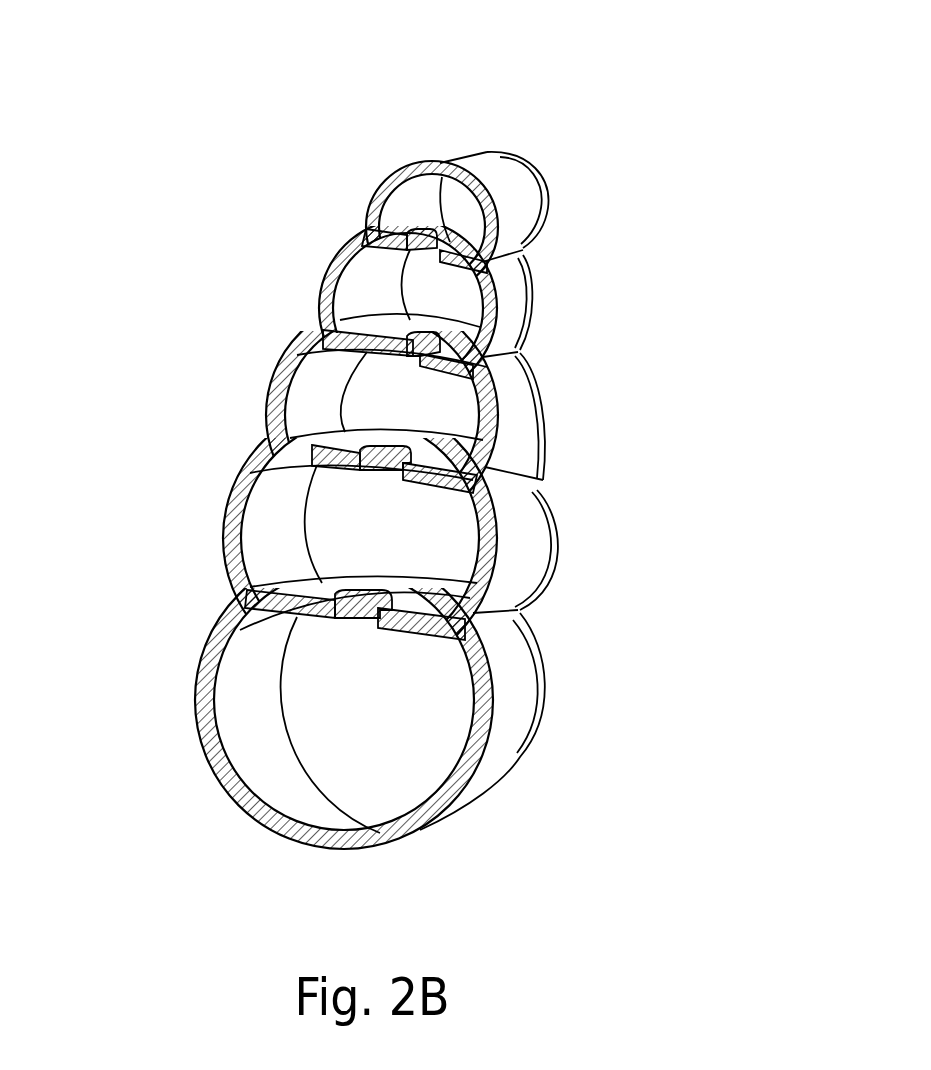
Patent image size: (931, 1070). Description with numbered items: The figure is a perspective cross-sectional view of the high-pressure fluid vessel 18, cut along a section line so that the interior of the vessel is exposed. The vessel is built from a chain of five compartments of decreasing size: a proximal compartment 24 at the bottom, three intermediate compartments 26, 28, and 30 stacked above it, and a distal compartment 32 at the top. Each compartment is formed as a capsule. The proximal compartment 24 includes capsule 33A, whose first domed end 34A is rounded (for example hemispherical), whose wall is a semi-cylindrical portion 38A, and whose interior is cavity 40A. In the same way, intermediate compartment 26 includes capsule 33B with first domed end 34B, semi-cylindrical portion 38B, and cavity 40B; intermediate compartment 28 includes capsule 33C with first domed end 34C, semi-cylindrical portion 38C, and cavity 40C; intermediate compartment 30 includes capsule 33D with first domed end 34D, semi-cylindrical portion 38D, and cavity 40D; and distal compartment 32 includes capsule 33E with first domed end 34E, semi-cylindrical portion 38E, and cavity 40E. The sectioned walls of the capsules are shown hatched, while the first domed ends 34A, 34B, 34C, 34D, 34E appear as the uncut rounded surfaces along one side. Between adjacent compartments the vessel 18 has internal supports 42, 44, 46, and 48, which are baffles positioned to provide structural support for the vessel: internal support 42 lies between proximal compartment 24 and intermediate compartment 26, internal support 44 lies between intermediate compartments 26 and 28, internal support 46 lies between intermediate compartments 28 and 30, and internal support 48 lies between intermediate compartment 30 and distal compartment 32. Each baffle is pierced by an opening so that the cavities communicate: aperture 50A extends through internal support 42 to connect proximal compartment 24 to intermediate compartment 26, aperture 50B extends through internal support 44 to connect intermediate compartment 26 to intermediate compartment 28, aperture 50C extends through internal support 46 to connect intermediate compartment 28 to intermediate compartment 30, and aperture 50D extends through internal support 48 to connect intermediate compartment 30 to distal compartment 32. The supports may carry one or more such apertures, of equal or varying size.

The high-pressure fluid vessel 18 is at (110, 96).
The proximal compartment 24 is at (576, 685).
The intermediate compartment 26 is at (576, 538).
The intermediate compartment 28 is at (566, 403).
The intermediate compartment 30 is at (560, 290).
The distal compartment 32 is at (562, 187).
The capsule 33A is at (504, 745).
The capsule 33B is at (513, 488).
The capsule 33C is at (537, 370).
The capsule 33D is at (545, 262).
The capsule 33E is at (515, 188).
The first domed end 34A is at (543, 710).
The first domed end 34B is at (553, 547).
The first domed end 34C is at (553, 412).
The first domed end 34D is at (553, 297).
The first domed end 34E is at (553, 215).
The semi-cylindrical portion 38A is at (448, 813).
The semi-cylindrical portion 38B is at (513, 572).
The semi-cylindrical portion 38C is at (513, 440).
The semi-cylindrical portion 38D is at (513, 325).
The semi-cylindrical portion 38E is at (520, 214).
The cavity 40A is at (357, 750).
The cavity 40B is at (350, 527).
The cavity 40C is at (387, 391).
The cavity 40D is at (437, 273).
The cavity 40E is at (463, 217).
The internal support 42 is at (222, 631).
The internal support 44 is at (300, 466).
The internal support 46 is at (320, 358).
The internal support 48 is at (372, 232).
The aperture 50A is at (352, 605).
The aperture 50B is at (367, 447).
The aperture 50C is at (407, 340).
The aperture 50D is at (430, 220).